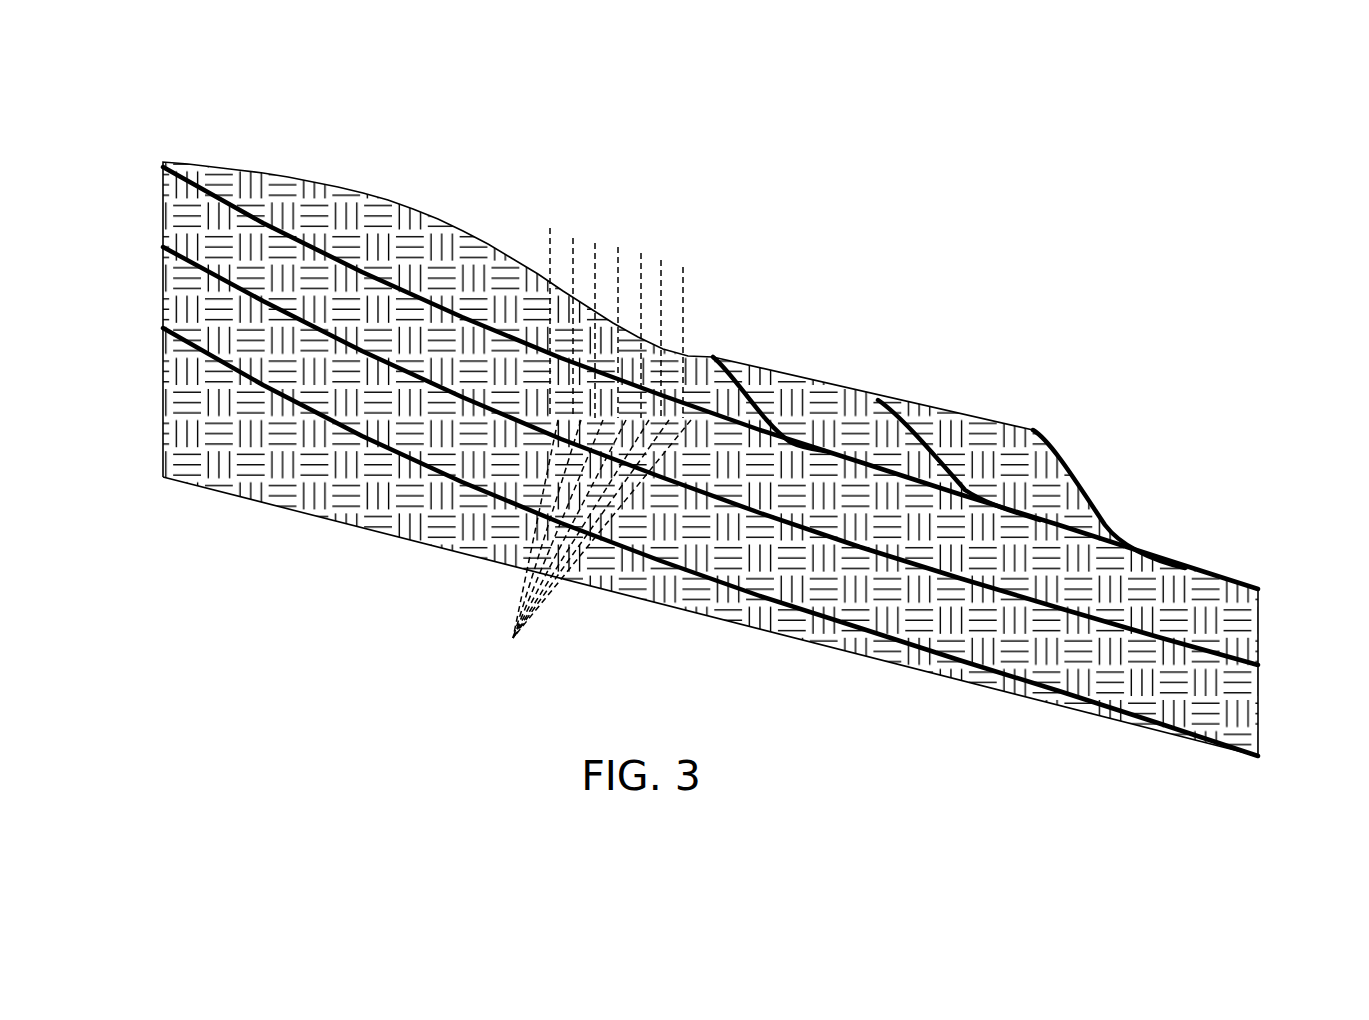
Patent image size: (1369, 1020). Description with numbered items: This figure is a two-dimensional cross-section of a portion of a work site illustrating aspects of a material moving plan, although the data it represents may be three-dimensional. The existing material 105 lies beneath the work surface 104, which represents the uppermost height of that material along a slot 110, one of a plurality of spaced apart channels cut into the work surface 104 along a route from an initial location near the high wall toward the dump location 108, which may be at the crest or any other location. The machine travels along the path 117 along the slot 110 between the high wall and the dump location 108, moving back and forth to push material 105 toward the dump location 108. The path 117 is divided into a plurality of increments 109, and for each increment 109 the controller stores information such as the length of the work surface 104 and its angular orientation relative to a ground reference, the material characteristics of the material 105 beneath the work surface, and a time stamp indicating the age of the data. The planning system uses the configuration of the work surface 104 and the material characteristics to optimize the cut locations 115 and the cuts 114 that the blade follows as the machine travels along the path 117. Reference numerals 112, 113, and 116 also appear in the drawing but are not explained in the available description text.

The work surface 104 is at (430, 213).
The material 105 is at (303, 217).
The dump location 108 is at (1298, 586).
The increments 109 is at (587, 546).
The slot 110 is at (1153, 450).
The bottom edge 112 is at (274, 505).
The reinforcing tows 113 is at (168, 330).
The cuts 114 is at (747, 390).
The cut locations 115 is at (713, 353).
The tow ends 116 is at (1223, 745).
The path 117 is at (641, 203).